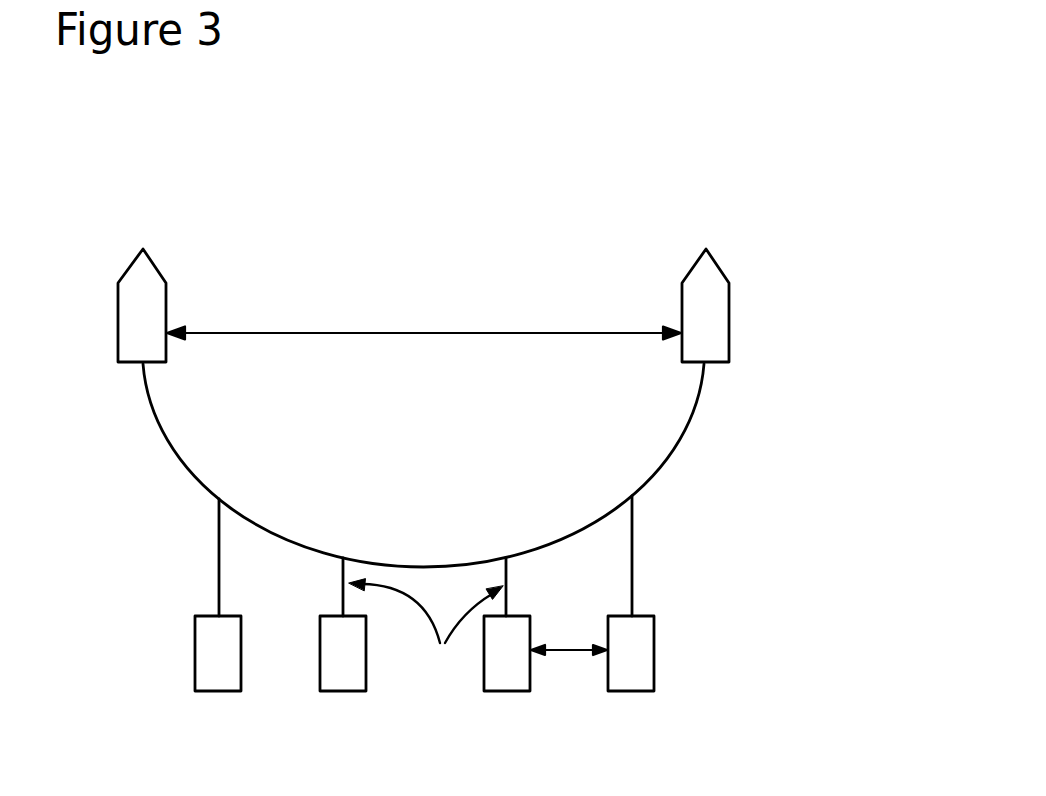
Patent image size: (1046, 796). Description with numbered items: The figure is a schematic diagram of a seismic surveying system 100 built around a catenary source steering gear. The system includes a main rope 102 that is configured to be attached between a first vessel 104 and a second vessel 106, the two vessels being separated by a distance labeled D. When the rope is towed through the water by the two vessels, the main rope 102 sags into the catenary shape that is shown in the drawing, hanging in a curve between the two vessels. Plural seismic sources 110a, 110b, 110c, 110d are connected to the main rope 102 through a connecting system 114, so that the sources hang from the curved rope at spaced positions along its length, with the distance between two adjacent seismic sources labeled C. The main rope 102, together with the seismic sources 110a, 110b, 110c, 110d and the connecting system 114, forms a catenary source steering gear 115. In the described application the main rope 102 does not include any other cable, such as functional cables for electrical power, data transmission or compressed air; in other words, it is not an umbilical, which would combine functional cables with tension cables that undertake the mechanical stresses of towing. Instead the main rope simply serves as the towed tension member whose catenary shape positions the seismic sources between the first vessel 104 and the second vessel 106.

The seismic surveying system 100 is at (485, 143).
The main rope 102 is at (413, 560).
The first vessel 104 is at (155, 300).
The second vessel 106 is at (718, 302).
The seismic source 110a is at (225, 672).
The seismic source 110b is at (343, 672).
The seismic source 110c is at (515, 673).
The seismic source 110d is at (645, 668).
The connecting system 114 is at (426, 629).
The catenary source steering gear 115 is at (688, 487).